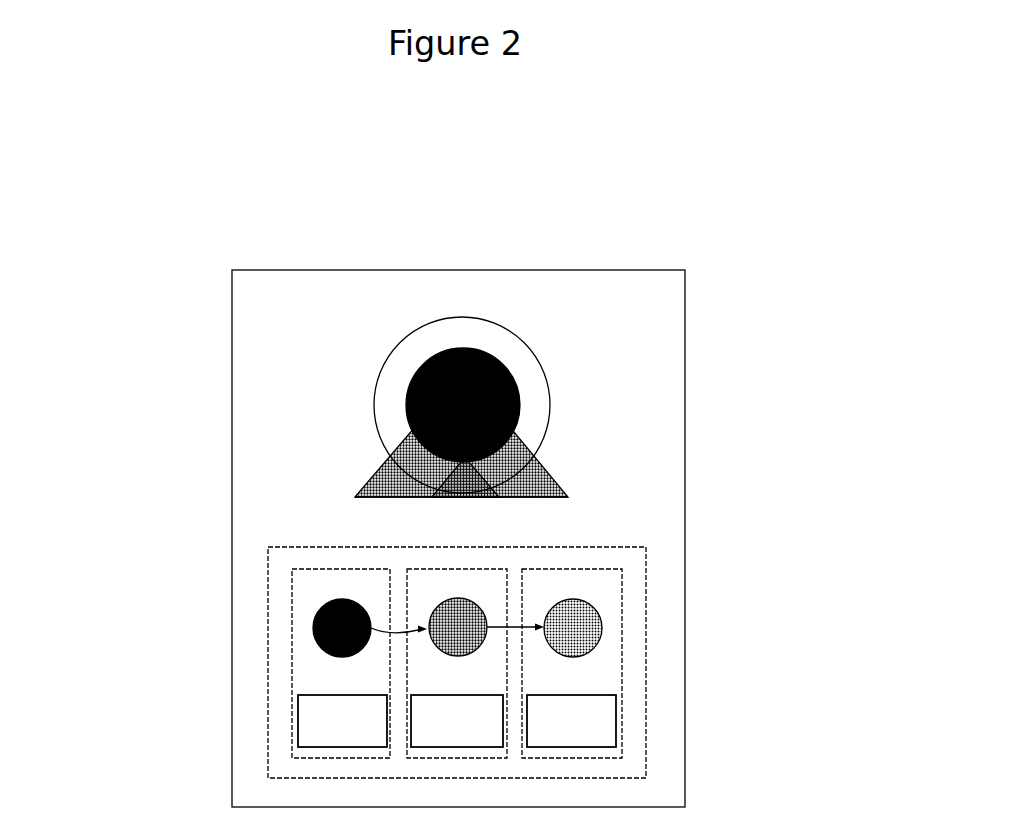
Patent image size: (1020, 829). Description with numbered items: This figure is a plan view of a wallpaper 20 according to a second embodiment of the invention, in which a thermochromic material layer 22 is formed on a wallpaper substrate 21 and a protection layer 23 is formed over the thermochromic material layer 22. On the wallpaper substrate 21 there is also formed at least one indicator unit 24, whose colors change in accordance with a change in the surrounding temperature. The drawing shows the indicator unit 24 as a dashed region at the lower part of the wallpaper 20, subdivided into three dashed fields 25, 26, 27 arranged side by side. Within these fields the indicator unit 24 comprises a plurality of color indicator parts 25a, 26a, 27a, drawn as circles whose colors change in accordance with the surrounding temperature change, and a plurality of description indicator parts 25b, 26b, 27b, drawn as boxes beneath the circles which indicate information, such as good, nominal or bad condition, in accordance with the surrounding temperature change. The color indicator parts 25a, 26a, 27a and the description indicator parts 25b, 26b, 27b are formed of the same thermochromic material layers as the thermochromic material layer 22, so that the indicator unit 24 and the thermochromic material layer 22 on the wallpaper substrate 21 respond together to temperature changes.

The wallpaper 20 is at (218, 322).
The wallpaper substrate 21 is at (350, 312).
The thermochromic material layer 22 is at (528, 388).
The protection layer 23 is at (546, 392).
The indicator unit 24 is at (645, 577).
The good condition field 25 is at (340, 563).
The nominal condition field 26 is at (394, 690).
The bad condition field 27 is at (629, 655).
The color indicator part 25a is at (316, 610).
The color indicator part 26a is at (432, 611).
The color indicator part 27a is at (302, 627).
The description indicator part 25b is at (367, 742).
The description indicator part 26b is at (492, 743).
The description indicator part 27b is at (590, 742).